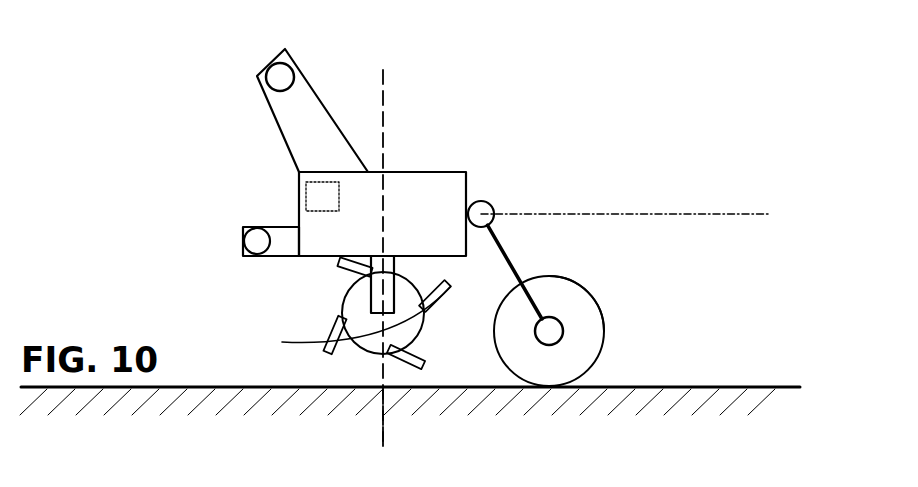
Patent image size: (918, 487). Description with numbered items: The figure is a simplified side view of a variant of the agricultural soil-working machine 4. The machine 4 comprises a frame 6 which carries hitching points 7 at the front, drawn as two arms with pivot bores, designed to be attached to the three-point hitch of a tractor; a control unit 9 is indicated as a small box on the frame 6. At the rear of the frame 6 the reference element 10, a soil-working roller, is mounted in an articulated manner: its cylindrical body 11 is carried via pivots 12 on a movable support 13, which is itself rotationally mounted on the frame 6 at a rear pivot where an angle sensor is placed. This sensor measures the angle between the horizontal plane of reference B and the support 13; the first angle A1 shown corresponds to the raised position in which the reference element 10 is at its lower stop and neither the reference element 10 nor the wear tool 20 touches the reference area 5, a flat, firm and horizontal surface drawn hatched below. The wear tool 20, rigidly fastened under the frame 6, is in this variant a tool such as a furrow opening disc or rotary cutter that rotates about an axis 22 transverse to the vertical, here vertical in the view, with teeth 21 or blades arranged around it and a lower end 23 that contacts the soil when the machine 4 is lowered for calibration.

The agricultural soil-working machine 4 is at (418, 93).
The reference area 5 is at (733, 385).
The frame 6 is at (425, 172).
The hitching points 7 is at (289, 66).
The control unit 9 is at (320, 195).
The reference element 10 is at (598, 287).
The cylindrical body 11 is at (573, 311).
The pivots 12 is at (550, 331).
The movable support 13 is at (518, 277).
The wear tool 20 is at (322, 292).
The teeth 21 is at (346, 328).
The axis 22 is at (382, 420).
The lower end 23 is at (423, 365).
The plane of reference B is at (625, 200).
The first angle A1 is at (516, 252).